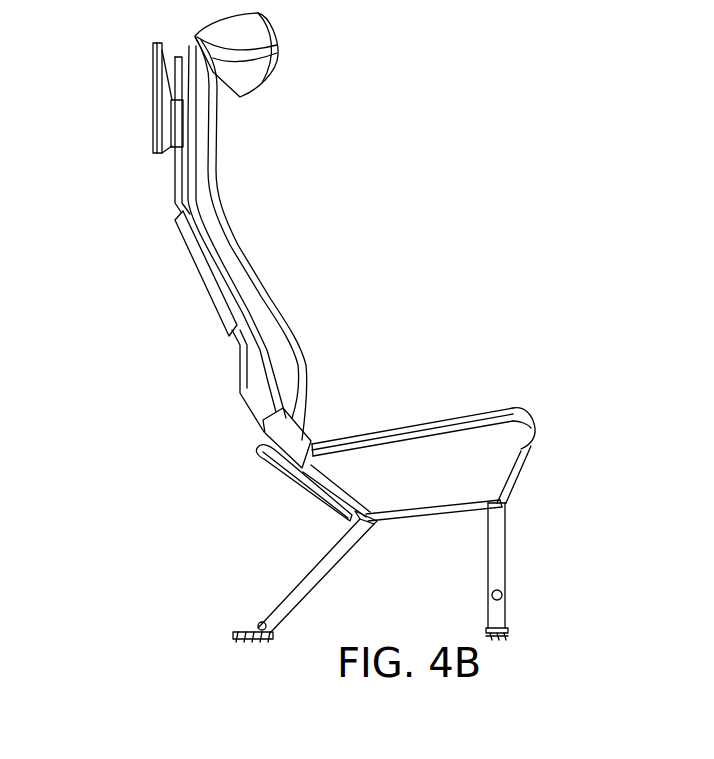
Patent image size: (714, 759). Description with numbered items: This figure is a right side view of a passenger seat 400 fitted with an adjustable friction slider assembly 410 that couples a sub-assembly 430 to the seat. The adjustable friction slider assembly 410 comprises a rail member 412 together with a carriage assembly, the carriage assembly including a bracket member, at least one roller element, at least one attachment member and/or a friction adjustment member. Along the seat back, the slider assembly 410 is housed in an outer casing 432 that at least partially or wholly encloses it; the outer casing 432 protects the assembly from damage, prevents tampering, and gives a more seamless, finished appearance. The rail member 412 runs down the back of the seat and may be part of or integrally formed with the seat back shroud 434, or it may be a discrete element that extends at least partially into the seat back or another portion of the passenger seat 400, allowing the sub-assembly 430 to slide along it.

The passenger seat 400 is at (331, 104).
The adjustable friction slider assembly 410 is at (195, 107).
The rail member 412 is at (172, 173).
The sub-assembly 430 is at (162, 107).
The outer casing 432 is at (185, 136).
The seat back shroud 434 is at (260, 403).